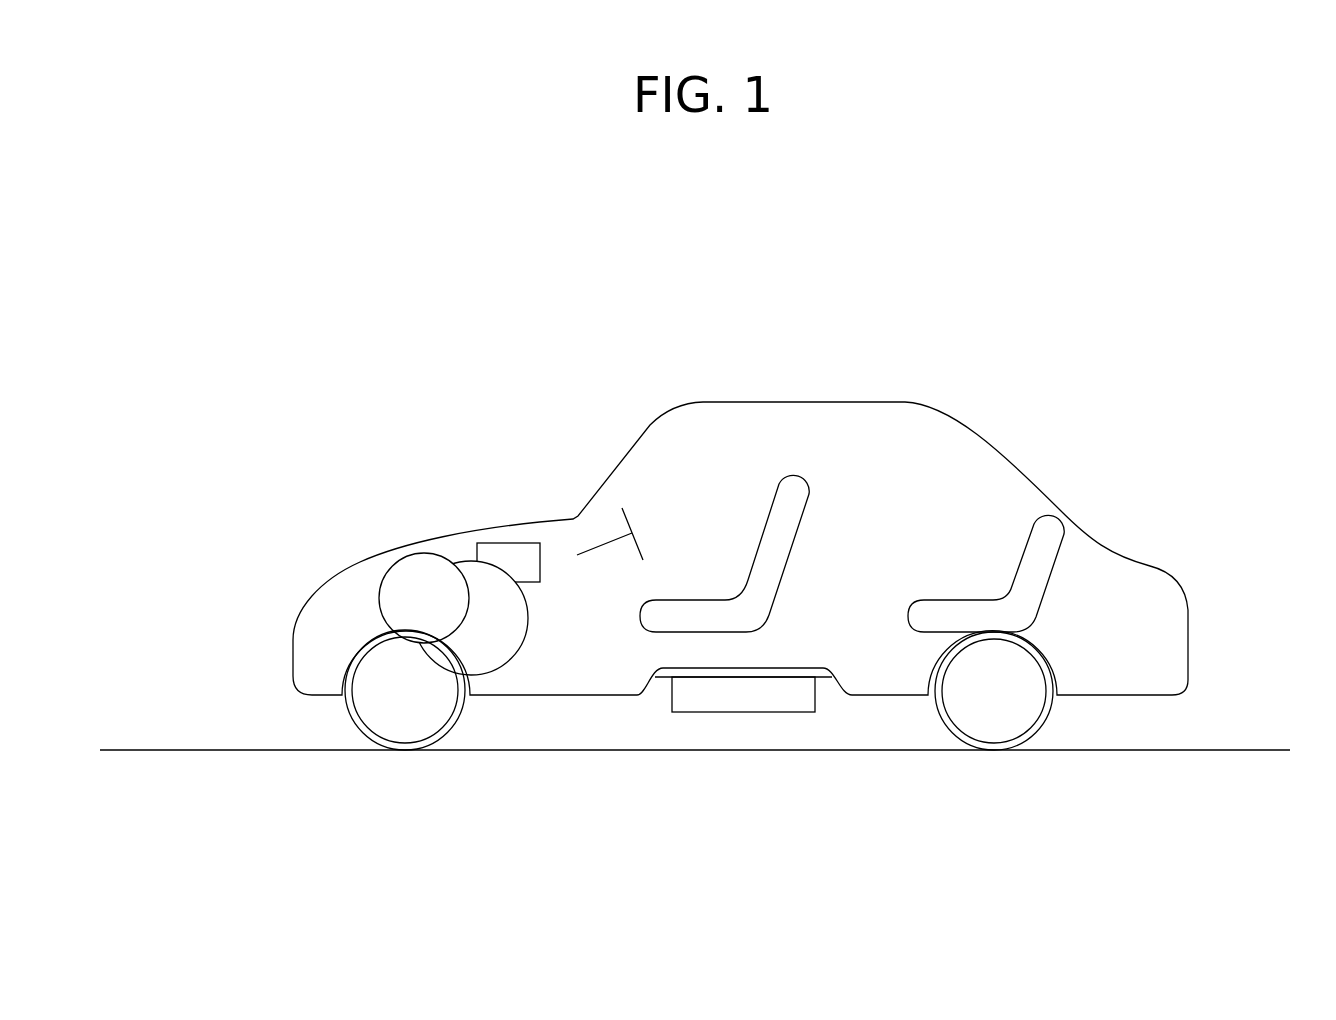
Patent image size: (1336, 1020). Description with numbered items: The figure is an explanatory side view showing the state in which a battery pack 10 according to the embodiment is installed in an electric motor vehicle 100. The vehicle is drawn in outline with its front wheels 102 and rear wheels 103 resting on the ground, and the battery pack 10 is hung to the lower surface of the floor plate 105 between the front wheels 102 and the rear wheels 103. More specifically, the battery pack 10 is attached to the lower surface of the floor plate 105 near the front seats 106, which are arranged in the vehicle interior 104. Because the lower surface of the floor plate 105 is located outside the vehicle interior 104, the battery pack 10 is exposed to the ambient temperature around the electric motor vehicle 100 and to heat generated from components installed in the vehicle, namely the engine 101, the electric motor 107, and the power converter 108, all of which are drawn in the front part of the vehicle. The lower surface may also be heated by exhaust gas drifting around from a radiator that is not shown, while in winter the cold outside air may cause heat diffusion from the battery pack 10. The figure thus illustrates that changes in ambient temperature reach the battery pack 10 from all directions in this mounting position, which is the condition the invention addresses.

The electric motor vehicle 100 is at (1135, 415).
The engine 101 is at (393, 573).
The front wheels 102 is at (358, 730).
The rear wheels 103 is at (1043, 727).
The vehicle interior 104 is at (898, 460).
The floor plate 105 is at (782, 663).
The front seats 106 is at (765, 522).
The electric motor 107 is at (510, 668).
The power converter 108 is at (510, 543).
The battery pack 10 is at (745, 713).